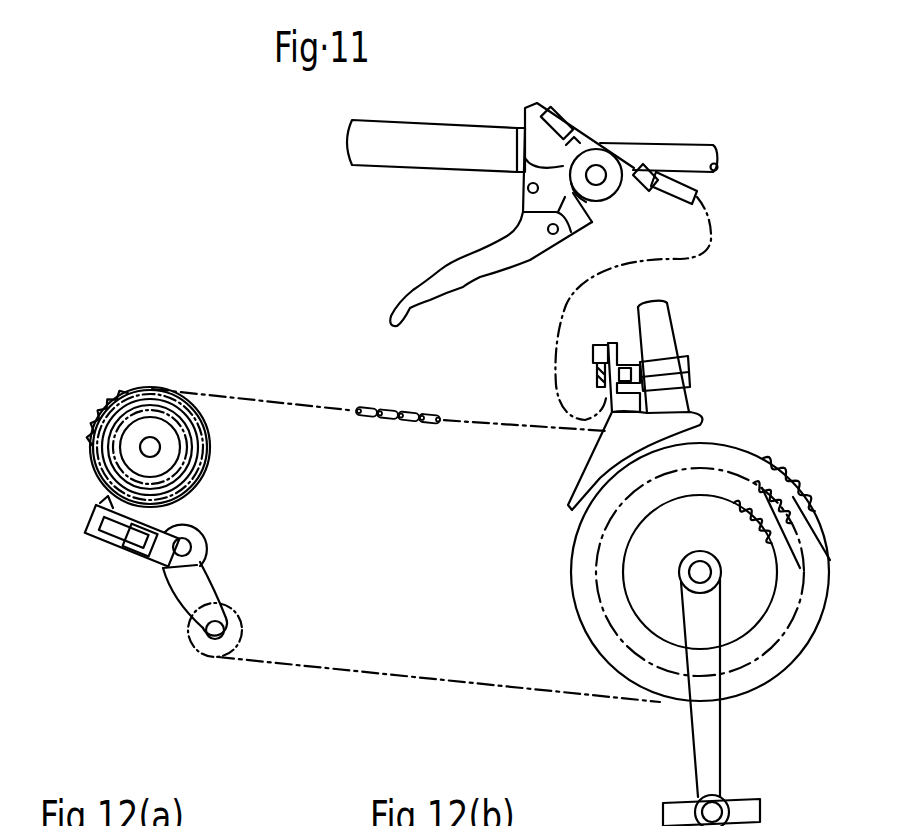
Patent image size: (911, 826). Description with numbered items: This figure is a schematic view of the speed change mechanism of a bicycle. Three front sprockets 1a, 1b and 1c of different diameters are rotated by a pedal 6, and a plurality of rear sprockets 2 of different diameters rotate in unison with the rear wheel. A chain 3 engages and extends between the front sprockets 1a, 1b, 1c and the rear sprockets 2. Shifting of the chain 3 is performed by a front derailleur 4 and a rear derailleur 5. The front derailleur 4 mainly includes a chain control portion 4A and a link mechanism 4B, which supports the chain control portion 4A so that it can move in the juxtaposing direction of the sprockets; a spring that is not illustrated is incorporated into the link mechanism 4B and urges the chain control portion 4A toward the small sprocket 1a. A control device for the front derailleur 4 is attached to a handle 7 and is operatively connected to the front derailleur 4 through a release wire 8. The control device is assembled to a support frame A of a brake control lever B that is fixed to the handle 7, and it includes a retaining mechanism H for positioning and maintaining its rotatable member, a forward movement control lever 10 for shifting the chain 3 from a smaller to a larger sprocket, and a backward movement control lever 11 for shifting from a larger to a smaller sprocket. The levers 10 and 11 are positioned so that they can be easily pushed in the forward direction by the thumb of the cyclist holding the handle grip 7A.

The front sprocket 1a is at (772, 533).
The front sprocket 1b is at (768, 482).
The front sprocket 1c is at (800, 490).
The rear sprockets 2 is at (92, 420).
The chain 3 is at (400, 418).
The front derailleur 4 is at (587, 448).
The chain control portion 4A is at (575, 474).
The link mechanism 4B is at (641, 380).
The rear derailleur 5 is at (148, 565).
The pedal 6 is at (757, 798).
The handle 7 is at (695, 143).
The handle grip 7A is at (397, 165).
The release wire 8 is at (677, 193).
The forward movement control lever 10 is at (528, 118).
The backward movement control lever 11 is at (565, 112).
The support frame A is at (522, 193).
The brake control lever B is at (468, 275).
The retaining mechanism H is at (606, 165).